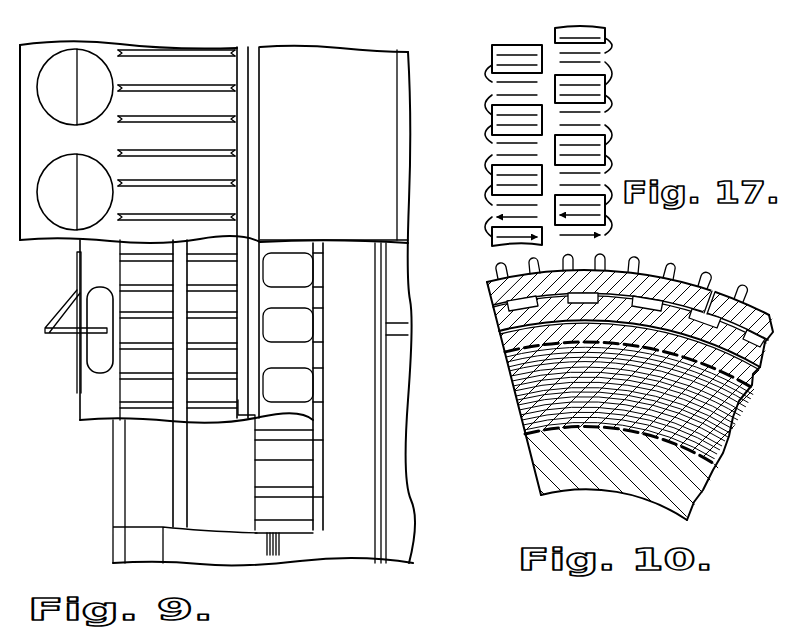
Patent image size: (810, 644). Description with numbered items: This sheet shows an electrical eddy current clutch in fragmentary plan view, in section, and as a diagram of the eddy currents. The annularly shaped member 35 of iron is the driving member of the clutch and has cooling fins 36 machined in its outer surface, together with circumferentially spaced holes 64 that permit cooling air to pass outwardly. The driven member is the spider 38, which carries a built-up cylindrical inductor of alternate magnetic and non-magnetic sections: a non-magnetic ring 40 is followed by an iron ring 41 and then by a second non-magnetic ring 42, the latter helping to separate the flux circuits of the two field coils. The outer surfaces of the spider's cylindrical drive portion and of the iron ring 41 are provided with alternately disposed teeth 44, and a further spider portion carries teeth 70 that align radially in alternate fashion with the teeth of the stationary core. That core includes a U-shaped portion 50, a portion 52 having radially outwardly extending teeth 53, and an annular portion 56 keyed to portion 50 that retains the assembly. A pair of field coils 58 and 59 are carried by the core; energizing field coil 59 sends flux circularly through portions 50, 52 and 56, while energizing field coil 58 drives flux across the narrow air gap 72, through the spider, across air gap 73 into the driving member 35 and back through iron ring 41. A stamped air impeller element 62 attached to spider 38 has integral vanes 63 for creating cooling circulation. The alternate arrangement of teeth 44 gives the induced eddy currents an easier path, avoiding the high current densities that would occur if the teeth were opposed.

In FIG. 9, the cooling fins 36 is at (186, 152).
In FIG. 10, the cooling fins 36 is at (612, 268).
In FIG. 9, the circumferentially spaced holes 64 is at (66, 165).
In FIG. 9, the second non-magnetic ring 42 is at (240, 163).
In FIG. 9, the U-shaped portion 50 is at (352, 100).
In FIG. 9, the field coil 59 is at (376, 282).
In FIG. 9, the spider 38 is at (86, 401).
In FIG. 9, the stamped air impeller element 62 is at (77, 264).
In FIG. 9, the integral vanes 63 is at (73, 335).
In FIG. 9, the teeth 44 is at (133, 304).
In FIG. 17, the teeth 44 is at (525, 45).
In FIG. 10, the teeth 44 is at (586, 300).
In FIG. 9, the non-magnetic ring 40 is at (185, 357).
In FIG. 9, the teeth 70 is at (297, 376).
In FIG. 9, the radially outwardly extending teeth 53 is at (276, 454).
In FIG. 10, the annularly shaped member 35 is at (683, 280).
In FIG. 10, the air gap 73 is at (715, 310).
In FIG. 10, the iron ring 41 is at (510, 328).
In FIG. 10, the core portion 52 is at (512, 346).
In FIG. 10, the narrow air gap 72 is at (507, 392).
In FIG. 10, the field coil 58 is at (522, 397).
In FIG. 10, the annular portion 56 is at (540, 460).